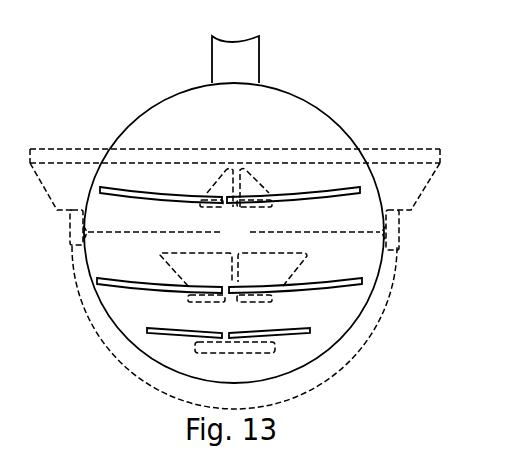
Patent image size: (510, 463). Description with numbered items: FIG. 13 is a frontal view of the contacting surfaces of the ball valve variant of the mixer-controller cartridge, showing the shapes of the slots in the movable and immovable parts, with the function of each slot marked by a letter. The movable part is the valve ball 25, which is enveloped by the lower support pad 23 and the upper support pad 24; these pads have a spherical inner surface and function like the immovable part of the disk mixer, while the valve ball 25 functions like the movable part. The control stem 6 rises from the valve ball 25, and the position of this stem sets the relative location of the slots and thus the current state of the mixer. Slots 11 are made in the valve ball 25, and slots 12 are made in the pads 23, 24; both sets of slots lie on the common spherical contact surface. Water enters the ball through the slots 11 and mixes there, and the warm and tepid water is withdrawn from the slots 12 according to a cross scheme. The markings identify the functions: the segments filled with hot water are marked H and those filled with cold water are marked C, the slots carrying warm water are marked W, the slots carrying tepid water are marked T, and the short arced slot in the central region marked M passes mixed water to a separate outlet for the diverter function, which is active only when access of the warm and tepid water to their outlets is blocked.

The control stem 6 is at (246, 66).
The slots 11 is at (102, 195).
The slots 12 is at (252, 208).
The lower support pad 23 is at (388, 270).
The upper support pad 24 is at (395, 173).
The valve ball 25 is at (158, 117).
The tepid water slot marking T is at (213, 187).
The warm water slot marking W is at (256, 187).
The hot water segment marking H is at (157, 332).
The cold water segment marking C is at (311, 329).
The mixed water slot marking M is at (242, 355).